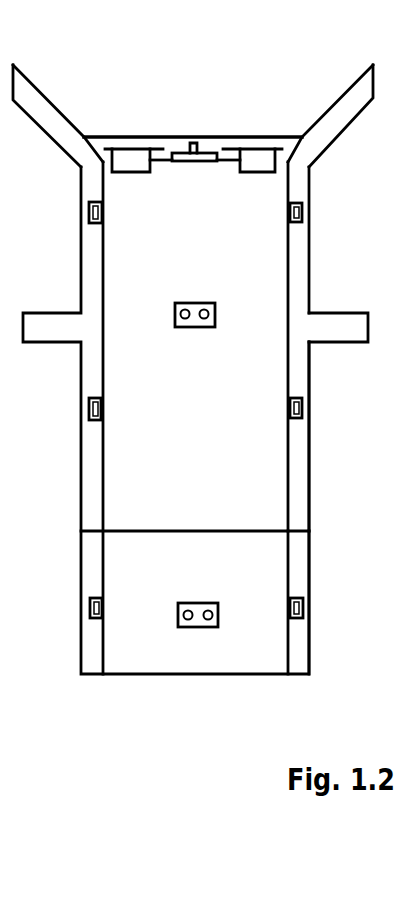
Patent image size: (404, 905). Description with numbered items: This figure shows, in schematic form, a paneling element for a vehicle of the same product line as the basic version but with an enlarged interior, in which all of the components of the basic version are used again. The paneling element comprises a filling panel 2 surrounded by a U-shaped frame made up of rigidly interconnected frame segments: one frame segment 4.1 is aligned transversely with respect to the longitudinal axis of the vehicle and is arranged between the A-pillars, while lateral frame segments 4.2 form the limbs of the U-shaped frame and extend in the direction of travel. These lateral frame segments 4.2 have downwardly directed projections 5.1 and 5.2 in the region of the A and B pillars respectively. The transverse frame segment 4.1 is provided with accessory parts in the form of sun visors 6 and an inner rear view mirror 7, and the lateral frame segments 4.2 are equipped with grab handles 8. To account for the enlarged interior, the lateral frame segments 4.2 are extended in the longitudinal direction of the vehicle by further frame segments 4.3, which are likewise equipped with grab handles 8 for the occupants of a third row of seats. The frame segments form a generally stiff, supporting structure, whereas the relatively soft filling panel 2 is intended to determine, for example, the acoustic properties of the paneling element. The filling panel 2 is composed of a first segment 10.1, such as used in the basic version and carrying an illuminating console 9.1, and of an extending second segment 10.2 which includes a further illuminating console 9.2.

The filling panel 2 is at (270, 663).
The frame segment 4.1 is at (242, 150).
The lateral frame segments 4.2 is at (297, 498).
The frame segments 4.3 is at (300, 563).
The downwardly directed projection 5.1 is at (31, 98).
The downwardly directed projection 5.2 is at (345, 327).
The sun visors 6 is at (130, 152).
The inner rear view mirror 7 is at (186, 150).
The grab handles 8 is at (305, 202).
The illuminating console 9.1 is at (197, 327).
The illuminating console 9.2 is at (195, 607).
The first segment 10.1 is at (223, 478).
The second segment 10.2 is at (225, 663).